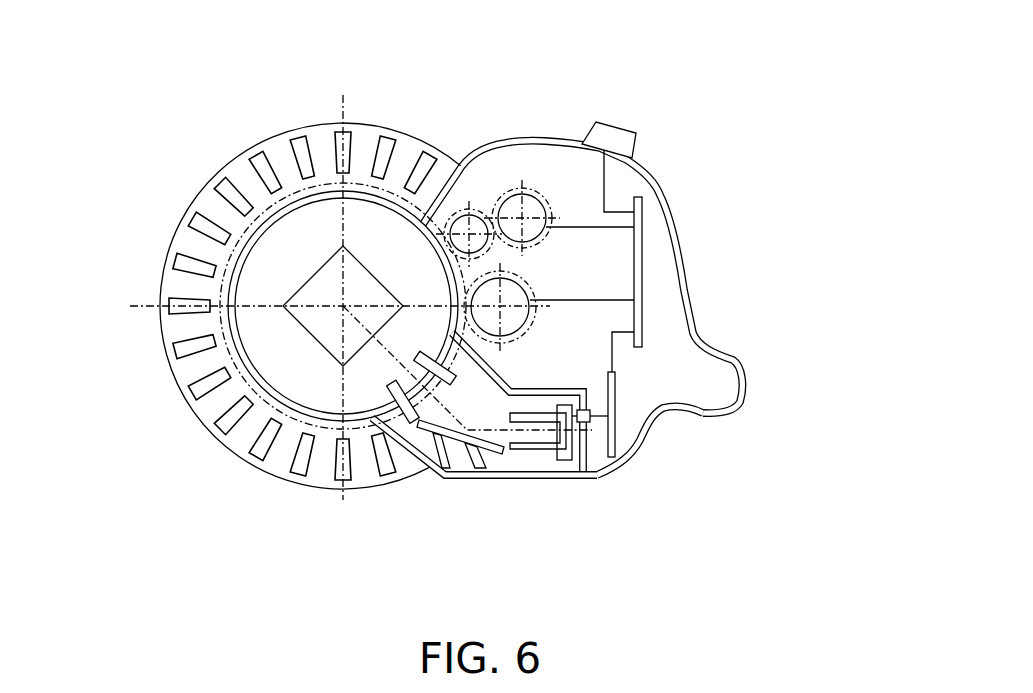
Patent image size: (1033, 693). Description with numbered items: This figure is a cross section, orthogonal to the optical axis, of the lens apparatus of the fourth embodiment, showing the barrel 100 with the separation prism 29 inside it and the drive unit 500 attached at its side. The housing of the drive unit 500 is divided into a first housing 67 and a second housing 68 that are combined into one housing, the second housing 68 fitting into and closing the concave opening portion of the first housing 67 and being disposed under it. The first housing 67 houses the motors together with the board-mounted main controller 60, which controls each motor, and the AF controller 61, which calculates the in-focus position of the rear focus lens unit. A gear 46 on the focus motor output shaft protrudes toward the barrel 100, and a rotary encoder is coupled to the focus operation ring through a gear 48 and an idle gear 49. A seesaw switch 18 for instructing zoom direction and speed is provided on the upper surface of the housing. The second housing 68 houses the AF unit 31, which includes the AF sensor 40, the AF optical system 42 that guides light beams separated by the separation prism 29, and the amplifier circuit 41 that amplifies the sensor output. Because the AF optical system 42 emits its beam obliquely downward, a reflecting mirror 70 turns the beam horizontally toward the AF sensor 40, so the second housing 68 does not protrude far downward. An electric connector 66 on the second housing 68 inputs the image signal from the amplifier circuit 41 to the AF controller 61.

The barrel 100 is at (213, 180).
The separation prism 29 is at (307, 282).
The idle gear 49 is at (466, 215).
The gear 46 is at (491, 278).
The gear 48 is at (526, 192).
The seesaw switch 18 is at (618, 128).
The drive unit 500 is at (677, 228).
The main controller 60 is at (642, 262).
The AF controller 61 is at (615, 405).
The first housing 67 is at (650, 445).
The second housing 68 is at (493, 476).
The AF optical system 42 is at (412, 412).
The reflecting mirror 70 is at (462, 460).
The AF sensor 40 is at (562, 448).
The amplifier circuit 41 is at (565, 460).
The electric connector 66 is at (585, 423).
The AF unit 31 is at (565, 509).